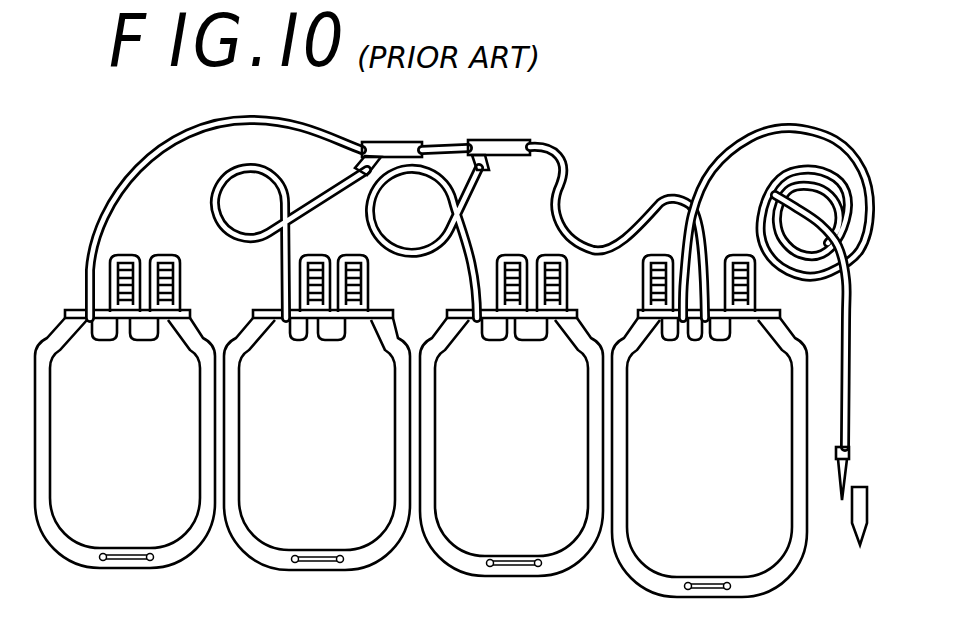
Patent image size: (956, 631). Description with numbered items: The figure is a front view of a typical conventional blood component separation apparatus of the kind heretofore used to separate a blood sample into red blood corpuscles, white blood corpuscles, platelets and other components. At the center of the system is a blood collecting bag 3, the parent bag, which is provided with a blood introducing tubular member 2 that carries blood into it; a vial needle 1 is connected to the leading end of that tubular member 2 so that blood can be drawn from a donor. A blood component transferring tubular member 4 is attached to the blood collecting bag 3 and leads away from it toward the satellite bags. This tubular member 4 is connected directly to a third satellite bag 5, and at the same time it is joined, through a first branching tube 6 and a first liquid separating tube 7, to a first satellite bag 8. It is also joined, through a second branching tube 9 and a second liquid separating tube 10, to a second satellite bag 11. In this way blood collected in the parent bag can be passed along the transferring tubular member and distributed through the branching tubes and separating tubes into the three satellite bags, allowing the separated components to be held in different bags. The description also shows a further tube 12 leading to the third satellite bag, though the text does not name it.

The vial needle 1 is at (849, 472).
The blood introducing tubular member 2 is at (849, 376).
The blood collecting bag 3 is at (648, 545).
The blood component transferring tubular member 4 is at (662, 198).
The third satellite bag 5 is at (72, 523).
The first branching tube 6 is at (512, 152).
The first liquid separating tube 7 is at (477, 233).
The first satellite bag 8 is at (460, 527).
The second branching tube 9 is at (392, 143).
The second liquid separating tube 10 is at (333, 198).
The second satellite bag 11 is at (262, 520).
The transfer tube 12 is at (128, 184).